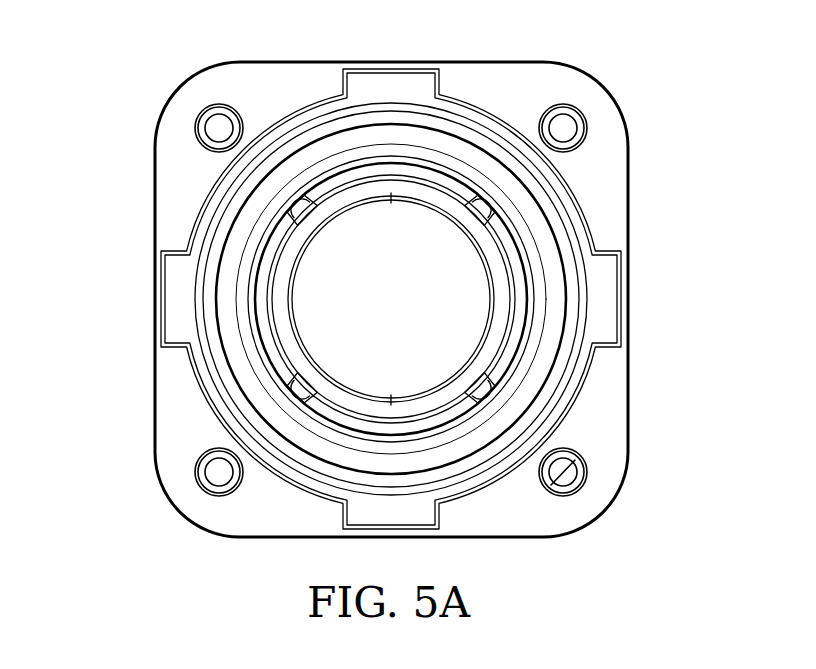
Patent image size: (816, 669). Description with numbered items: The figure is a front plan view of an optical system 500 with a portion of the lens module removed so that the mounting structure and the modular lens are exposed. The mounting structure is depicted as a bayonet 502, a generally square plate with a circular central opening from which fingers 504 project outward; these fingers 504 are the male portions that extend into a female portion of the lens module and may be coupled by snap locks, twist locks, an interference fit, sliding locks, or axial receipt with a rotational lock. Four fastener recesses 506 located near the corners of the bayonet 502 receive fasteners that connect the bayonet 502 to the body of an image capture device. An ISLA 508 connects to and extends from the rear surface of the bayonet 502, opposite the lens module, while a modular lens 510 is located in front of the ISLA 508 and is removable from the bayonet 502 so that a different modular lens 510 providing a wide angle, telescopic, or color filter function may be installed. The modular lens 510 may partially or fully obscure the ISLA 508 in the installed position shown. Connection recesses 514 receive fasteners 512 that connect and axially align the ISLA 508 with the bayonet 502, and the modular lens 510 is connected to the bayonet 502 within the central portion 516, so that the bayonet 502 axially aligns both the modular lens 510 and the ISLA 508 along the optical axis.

The optical system 500 is at (96, 68).
The bayonet 502 is at (180, 182).
The fingers 504 is at (168, 321).
The fastener recesses 506 is at (215, 473).
The ISLA 508 is at (450, 182).
The modular lens 510 is at (347, 400).
The fasteners 512 is at (485, 203).
The connection recesses 514 is at (508, 223).
The central portion 516 is at (533, 370).